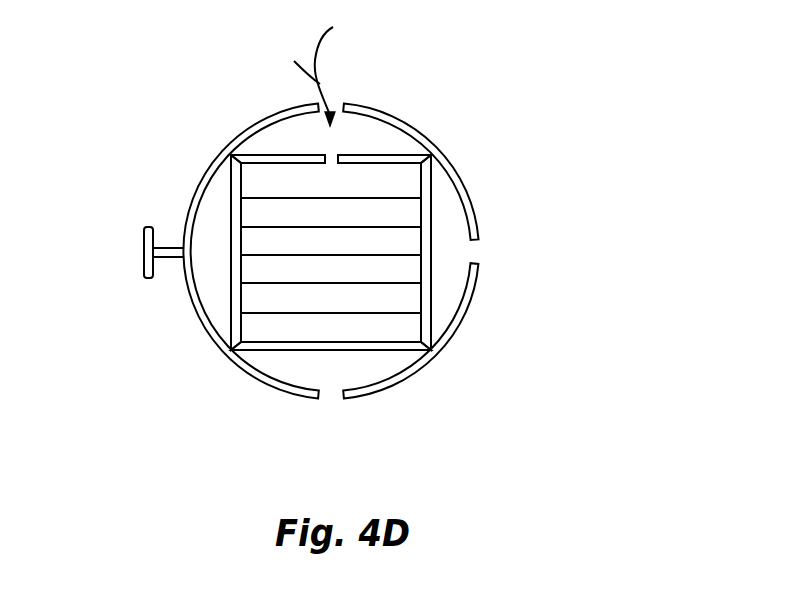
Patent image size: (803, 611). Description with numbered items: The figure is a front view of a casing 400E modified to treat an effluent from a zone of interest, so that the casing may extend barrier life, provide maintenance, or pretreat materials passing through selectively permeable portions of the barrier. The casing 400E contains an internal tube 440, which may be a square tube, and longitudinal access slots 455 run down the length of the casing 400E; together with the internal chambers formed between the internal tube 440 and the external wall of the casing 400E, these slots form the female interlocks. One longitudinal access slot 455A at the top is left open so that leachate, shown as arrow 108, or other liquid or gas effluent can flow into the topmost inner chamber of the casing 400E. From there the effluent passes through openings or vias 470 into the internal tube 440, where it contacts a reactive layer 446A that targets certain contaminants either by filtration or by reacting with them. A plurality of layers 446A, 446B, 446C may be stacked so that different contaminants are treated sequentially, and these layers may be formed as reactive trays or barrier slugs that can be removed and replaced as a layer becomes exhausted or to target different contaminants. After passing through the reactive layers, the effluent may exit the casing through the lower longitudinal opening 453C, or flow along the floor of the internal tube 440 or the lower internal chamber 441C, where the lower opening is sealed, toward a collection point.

The leachate 108 is at (336, 67).
The longitudinal access slot 455A is at (341, 104).
The openings or vias 470 is at (333, 157).
The reactive layer 446A is at (402, 180).
The reactive layer 446B is at (258, 212).
The reactive layer 446C is at (262, 238).
The internal tube 440 is at (434, 283).
The lower opening 453C is at (345, 393).
The longitudinal access slots 455 is at (333, 374).
The lower internal chamber 441C is at (378, 368).
The casing 400E is at (481, 362).